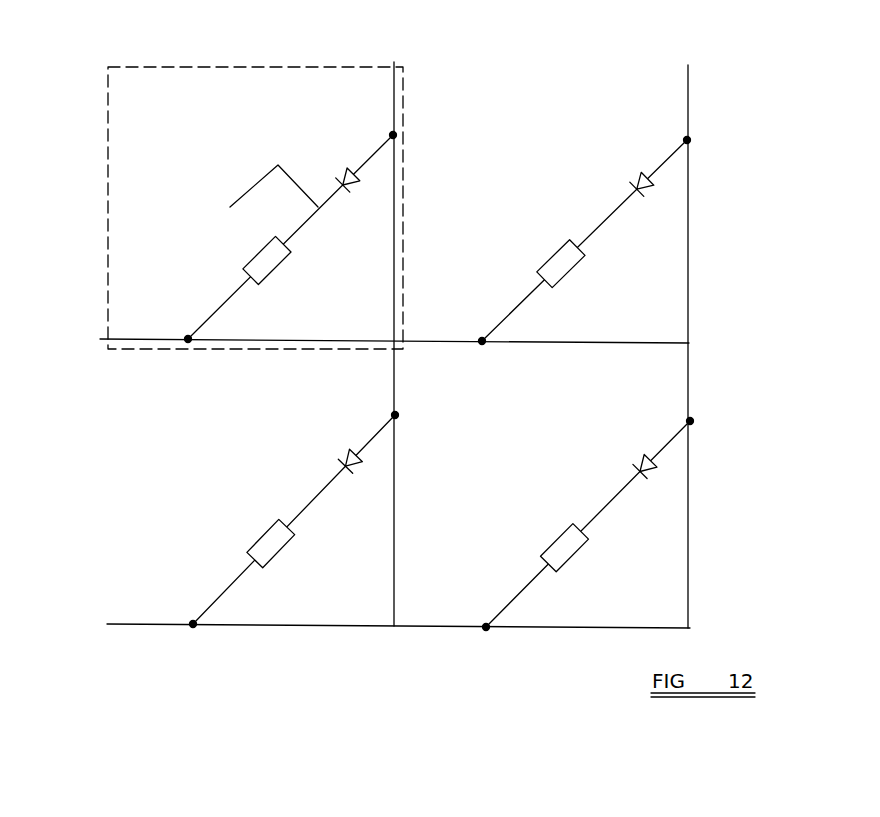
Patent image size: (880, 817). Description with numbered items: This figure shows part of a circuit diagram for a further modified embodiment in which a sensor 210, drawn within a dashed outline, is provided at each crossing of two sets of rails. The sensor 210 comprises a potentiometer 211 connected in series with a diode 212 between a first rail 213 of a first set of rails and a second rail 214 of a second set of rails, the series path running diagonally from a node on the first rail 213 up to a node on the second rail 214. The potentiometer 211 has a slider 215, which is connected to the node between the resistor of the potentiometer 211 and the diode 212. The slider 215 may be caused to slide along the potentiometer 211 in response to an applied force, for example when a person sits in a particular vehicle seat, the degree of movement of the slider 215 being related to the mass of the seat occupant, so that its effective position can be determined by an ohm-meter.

The sensor 210 is at (107, 165).
The potentiometer 211 is at (232, 242).
The diode 212 is at (351, 188).
The first rail 213 is at (302, 342).
The second rail 214 is at (398, 363).
The slider 215 is at (252, 237).